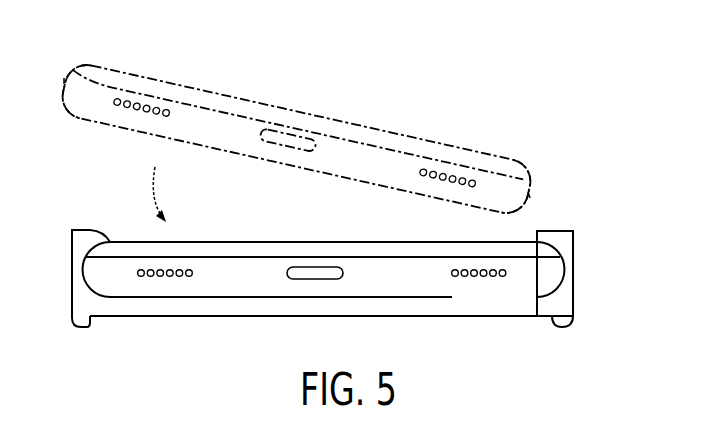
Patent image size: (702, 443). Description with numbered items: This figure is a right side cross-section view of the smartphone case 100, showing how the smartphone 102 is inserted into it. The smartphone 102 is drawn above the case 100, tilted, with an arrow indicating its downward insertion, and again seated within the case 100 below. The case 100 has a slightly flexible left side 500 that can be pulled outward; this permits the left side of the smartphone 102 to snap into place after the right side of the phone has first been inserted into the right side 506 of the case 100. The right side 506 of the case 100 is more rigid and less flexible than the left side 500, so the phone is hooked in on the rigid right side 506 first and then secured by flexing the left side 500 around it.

The smartphone case 100 is at (609, 246).
The smartphone 102 is at (354, 116).
The left side of the case 500 is at (72, 276).
The right side of the case 506 is at (573, 273).